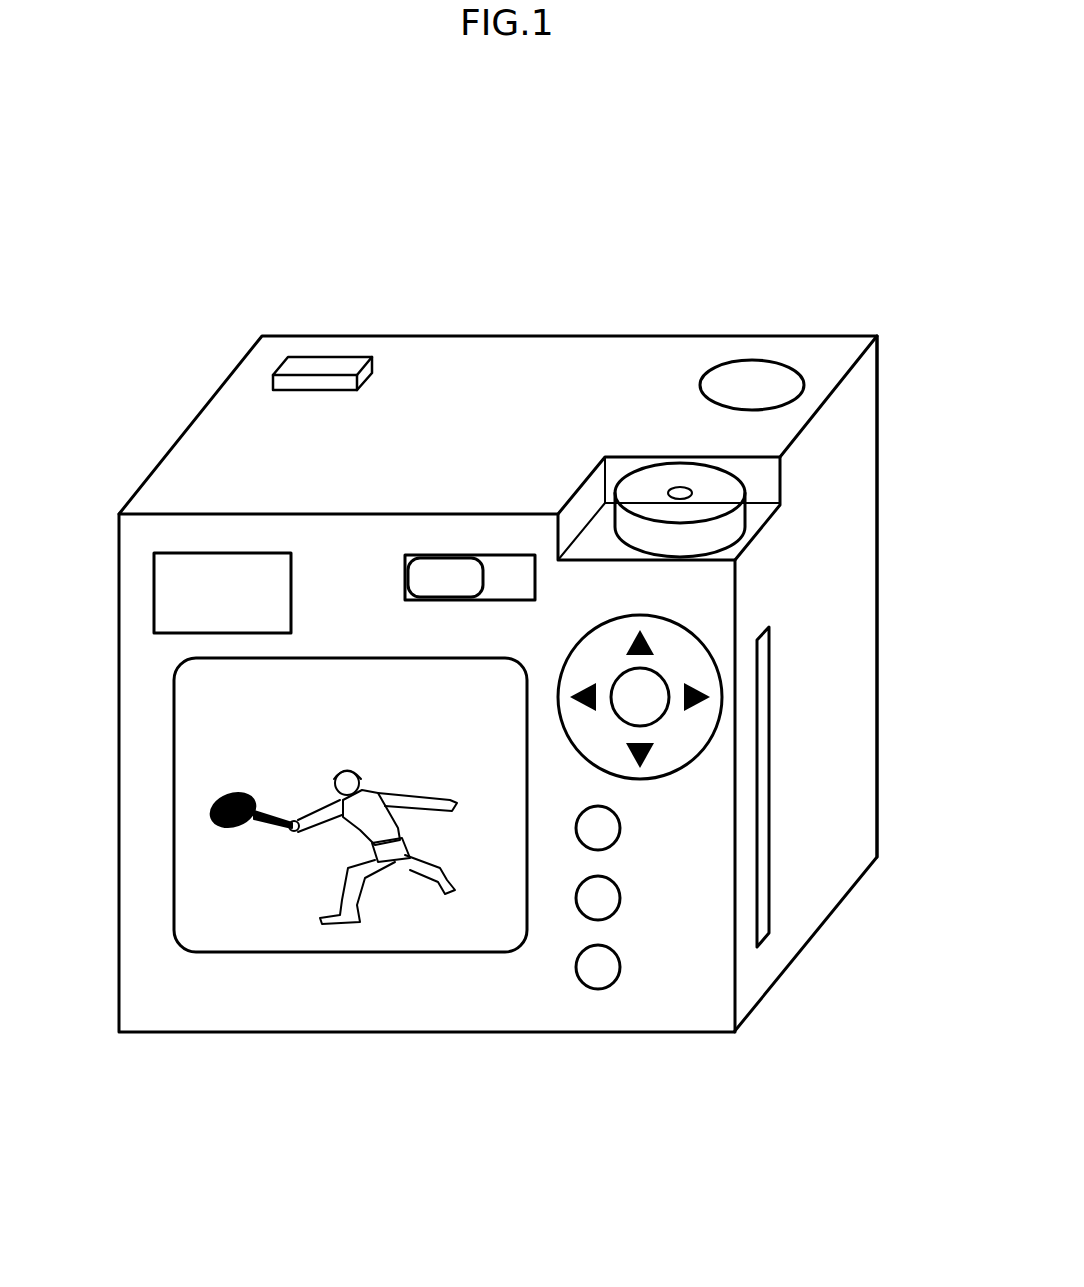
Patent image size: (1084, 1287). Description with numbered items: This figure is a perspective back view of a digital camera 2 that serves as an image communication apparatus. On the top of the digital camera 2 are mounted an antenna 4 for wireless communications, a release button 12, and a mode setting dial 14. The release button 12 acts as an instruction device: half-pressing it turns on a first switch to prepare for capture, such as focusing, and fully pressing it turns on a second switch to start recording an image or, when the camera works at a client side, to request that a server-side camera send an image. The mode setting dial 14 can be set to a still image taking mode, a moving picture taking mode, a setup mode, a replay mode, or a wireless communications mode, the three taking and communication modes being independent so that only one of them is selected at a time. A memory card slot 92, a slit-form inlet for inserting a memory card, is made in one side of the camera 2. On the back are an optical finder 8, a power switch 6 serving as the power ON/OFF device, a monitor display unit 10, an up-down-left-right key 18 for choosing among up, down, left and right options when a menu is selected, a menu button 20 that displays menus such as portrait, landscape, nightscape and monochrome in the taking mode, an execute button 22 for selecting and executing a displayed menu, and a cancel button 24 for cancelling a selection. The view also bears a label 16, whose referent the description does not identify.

The digital camera 2 is at (562, 280).
The antenna 4 is at (343, 360).
The power switch 6 is at (456, 555).
The optical finder 8 is at (153, 590).
The monitor display unit 10 is at (208, 760).
The release button 12 is at (745, 385).
The mode setting dial 14 is at (662, 485).
The camera body 16 is at (862, 580).
The up-down-left-right key 18 is at (658, 683).
The menu button 20 is at (575, 830).
The execute button 22 is at (580, 913).
The cancel button 24 is at (600, 990).
The memory card slot 92 is at (771, 868).